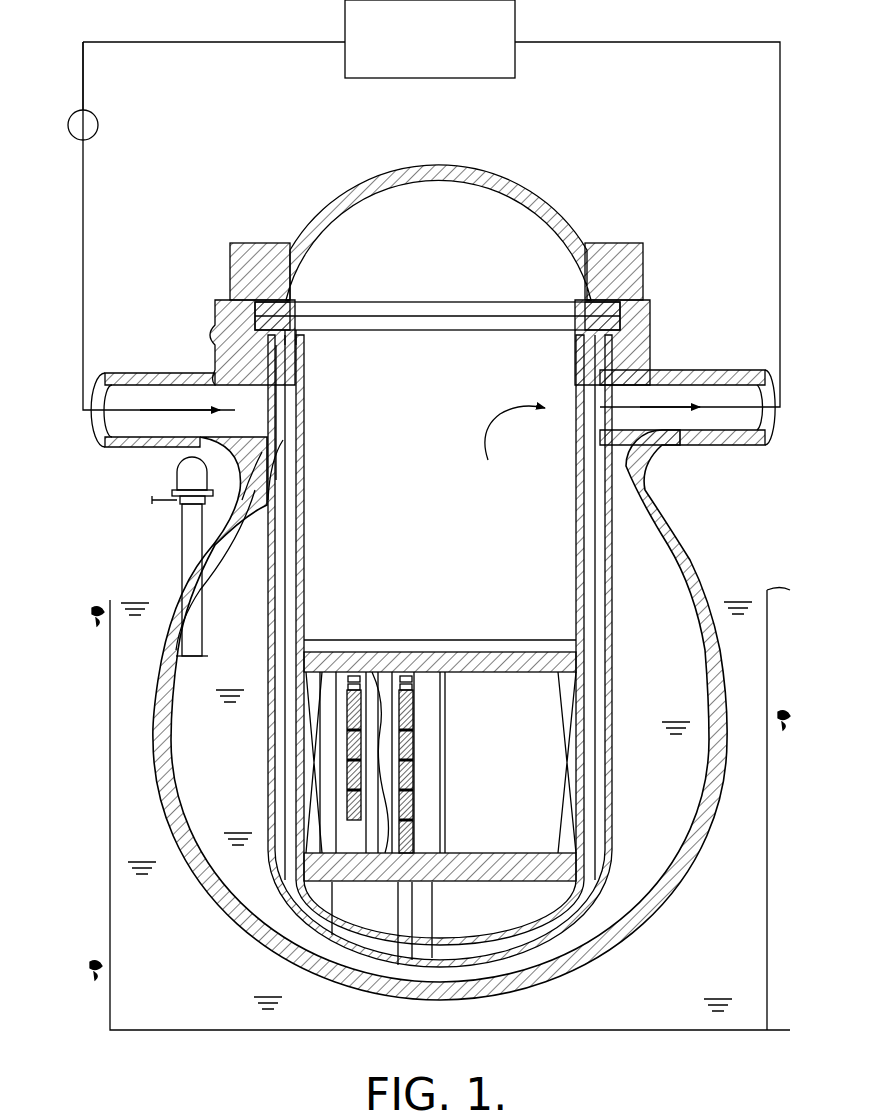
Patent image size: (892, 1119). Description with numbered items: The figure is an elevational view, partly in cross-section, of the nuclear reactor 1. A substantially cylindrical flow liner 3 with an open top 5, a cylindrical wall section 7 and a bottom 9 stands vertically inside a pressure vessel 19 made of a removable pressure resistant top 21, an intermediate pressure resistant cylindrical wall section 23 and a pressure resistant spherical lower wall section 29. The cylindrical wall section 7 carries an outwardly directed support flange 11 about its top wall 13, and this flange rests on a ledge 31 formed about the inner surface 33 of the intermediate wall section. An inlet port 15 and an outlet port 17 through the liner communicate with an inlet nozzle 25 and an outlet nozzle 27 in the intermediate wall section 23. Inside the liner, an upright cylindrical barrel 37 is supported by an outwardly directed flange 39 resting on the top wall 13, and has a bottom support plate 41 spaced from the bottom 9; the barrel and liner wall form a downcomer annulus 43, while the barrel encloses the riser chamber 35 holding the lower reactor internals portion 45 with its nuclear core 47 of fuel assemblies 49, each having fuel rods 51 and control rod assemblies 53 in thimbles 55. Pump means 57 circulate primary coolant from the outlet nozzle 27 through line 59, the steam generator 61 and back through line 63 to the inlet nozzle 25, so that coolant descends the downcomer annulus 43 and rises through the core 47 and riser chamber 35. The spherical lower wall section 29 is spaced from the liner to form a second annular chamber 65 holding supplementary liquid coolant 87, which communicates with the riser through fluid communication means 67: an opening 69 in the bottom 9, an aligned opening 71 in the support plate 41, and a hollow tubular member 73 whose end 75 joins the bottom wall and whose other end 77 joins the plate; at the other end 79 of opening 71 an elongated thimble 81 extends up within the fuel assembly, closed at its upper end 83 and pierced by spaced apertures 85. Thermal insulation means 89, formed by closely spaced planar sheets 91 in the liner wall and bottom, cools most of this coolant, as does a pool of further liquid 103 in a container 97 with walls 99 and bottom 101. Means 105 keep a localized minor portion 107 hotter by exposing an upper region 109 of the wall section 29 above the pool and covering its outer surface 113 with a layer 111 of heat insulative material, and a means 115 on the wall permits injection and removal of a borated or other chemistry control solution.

The nuclear reactor 1 is at (80, 533).
The flow liner 3 is at (612, 640).
The open top 5 is at (462, 318).
The cylindrical wall section 7 is at (605, 712).
The bottom 9 is at (552, 926).
The support flange 11 is at (300, 343).
The top wall 13 is at (232, 352).
The inlet port 15 is at (300, 400).
The outlet port 17 is at (545, 377).
The pressure vessel 19 is at (718, 545).
The pressure resistant top 21 is at (388, 186).
The intermediate pressure resistant cylindrical wall section 23 is at (665, 352).
The inlet nozzle 25 is at (112, 390).
The outlet nozzle 27 is at (736, 375).
The pressure resistant spherical lower wall section 29 is at (158, 712).
The ledge 31 is at (632, 315).
The inner surface 33 is at (590, 390).
The riser chamber 35 is at (565, 778).
The upright cylindrical barrel 37 is at (300, 616).
The outwardly directed flange 39 is at (310, 330).
The bottom support plate 41 is at (528, 868).
The downcomer annulus 43 is at (302, 582).
The lower reactor internals portion 45 is at (507, 692).
The nuclear core 47 is at (416, 793).
The fuel assembly 49 is at (412, 768).
The fuel rod 51 is at (412, 718).
The control rod assembly 53 is at (412, 737).
The thimble 55 is at (412, 750).
The pump means 57 is at (98, 125).
The line 59 is at (780, 202).
The steam generator 61 is at (466, 80).
The line 63 is at (83, 72).
The second annular chamber 65 is at (232, 811).
The fluid communication means 67 is at (398, 898).
The opening 69 is at (357, 920).
The opening 71 is at (480, 870).
The hollow tubular member 73 is at (400, 928).
The end 75 is at (444, 955).
The other end 77 is at (442, 890).
The other end 79 is at (444, 852).
The elongated thimble 81 is at (392, 744).
The upper end 83 is at (458, 652).
The apertures 85 is at (390, 873).
The supplementary liquid coolant 87 is at (212, 746).
The thermal insulation means 89 is at (264, 771).
The planar sheets 91 is at (270, 659).
The container 97 is at (98, 810).
The walls 99 is at (110, 928).
The bottom 101 is at (210, 1030).
The pool of further liquid 103 is at (152, 976).
The means 105 is at (180, 555).
The localized minor portion 107 is at (232, 564).
The upper region 109 is at (216, 562).
The layer of heat insulative material 111 is at (300, 488).
The outer surface 113 is at (300, 520).
The means 115 is at (175, 480).